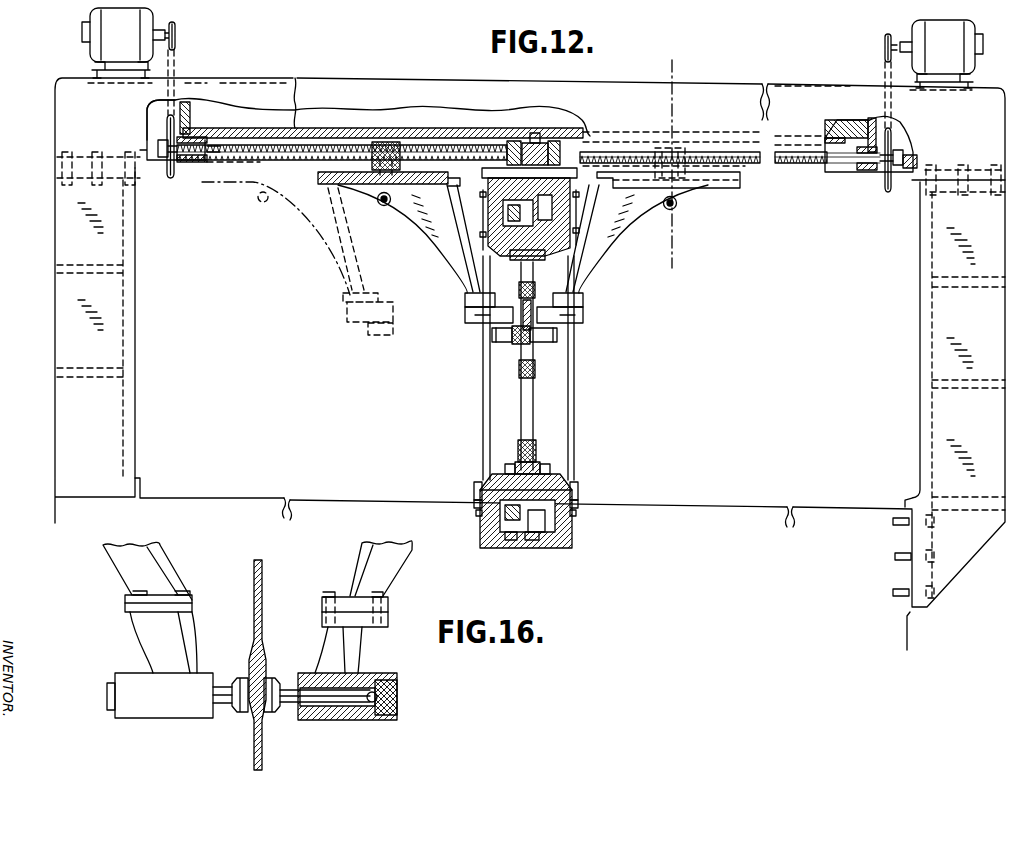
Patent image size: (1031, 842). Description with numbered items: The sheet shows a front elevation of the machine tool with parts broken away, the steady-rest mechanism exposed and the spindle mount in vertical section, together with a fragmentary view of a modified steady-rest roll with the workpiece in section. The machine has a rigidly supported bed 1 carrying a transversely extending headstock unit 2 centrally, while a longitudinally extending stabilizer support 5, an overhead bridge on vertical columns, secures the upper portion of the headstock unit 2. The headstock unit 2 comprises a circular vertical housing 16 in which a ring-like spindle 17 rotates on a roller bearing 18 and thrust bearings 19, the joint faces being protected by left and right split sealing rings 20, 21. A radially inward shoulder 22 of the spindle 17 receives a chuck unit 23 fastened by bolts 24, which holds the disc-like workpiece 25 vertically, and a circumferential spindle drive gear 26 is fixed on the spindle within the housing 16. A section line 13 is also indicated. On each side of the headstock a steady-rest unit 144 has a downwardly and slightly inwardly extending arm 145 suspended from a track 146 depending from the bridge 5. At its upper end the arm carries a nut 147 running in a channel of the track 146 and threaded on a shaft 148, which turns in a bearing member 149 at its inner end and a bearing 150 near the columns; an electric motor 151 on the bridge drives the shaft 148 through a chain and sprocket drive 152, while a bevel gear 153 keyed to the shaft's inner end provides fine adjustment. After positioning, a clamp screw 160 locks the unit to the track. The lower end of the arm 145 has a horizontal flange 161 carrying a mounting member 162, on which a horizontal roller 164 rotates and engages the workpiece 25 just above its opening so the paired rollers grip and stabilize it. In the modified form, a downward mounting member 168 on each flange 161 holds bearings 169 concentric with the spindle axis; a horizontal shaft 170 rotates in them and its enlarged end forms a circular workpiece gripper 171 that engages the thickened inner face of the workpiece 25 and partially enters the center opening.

In FIG. 12, the bed 1 is at (714, 478).
In FIG. 12, the headstock unit 2 is at (481, 406).
In FIG. 12, the stabilizer support 5 is at (401, 77).
In FIG. 12, the section line 13 is at (692, 62).
In FIG. 12, the housing 16 is at (482, 530).
In FIG. 12, the spindle 17 is at (500, 472).
In FIG. 12, the roller bearing 18 is at (533, 540).
In FIG. 12, the thrust bearings 19 is at (486, 482).
In FIG. 12, the left split sealing ring 20 is at (476, 500).
In FIG. 12, the right split sealing ring 21 is at (576, 502).
In FIG. 12, the shoulder 22 is at (510, 464).
In FIG. 12, the chuck unit 23 is at (542, 462).
In FIG. 12, the bolts 24 is at (535, 468).
In FIG. 12, the workpiece 25 is at (533, 409).
In FIG. 16, the workpiece 25 is at (265, 595).
In FIG. 12, the spindle drive gear 26 is at (510, 540).
In FIG. 12, the steady-rest unit 144 is at (315, 241).
In FIG. 12, the arm 145 is at (456, 263).
In FIG. 16, the arm 145 is at (128, 575).
In FIG. 12, the track 146 is at (235, 165).
In FIG. 12, the nut 147 is at (392, 140).
In FIG. 12, the shaft 148 is at (430, 146).
In FIG. 12, the bearing member 149 is at (536, 142).
In FIG. 12, the bearing 150 is at (172, 180).
In FIG. 12, the electric motor 151 is at (92, 47).
In FIG. 12, the chain and sprocket drive 152 is at (178, 63).
In FIG. 12, the bevel gear 153 is at (510, 148).
In FIG. 12, the clamp screw 160 is at (380, 204).
In FIG. 12, the flange 161 is at (466, 298).
In FIG. 16, the flange 161 is at (130, 601).
In FIG. 12, the mounting member 162 is at (466, 320).
In FIG. 12, the roller 164 is at (492, 336).
In FIG. 16, the mounting member 168 is at (135, 619).
In FIG. 16, the bearings 169 is at (382, 716).
In FIG. 16, the shaft 170 is at (224, 706).
In FIG. 16, the workpiece gripper 171 is at (242, 677).